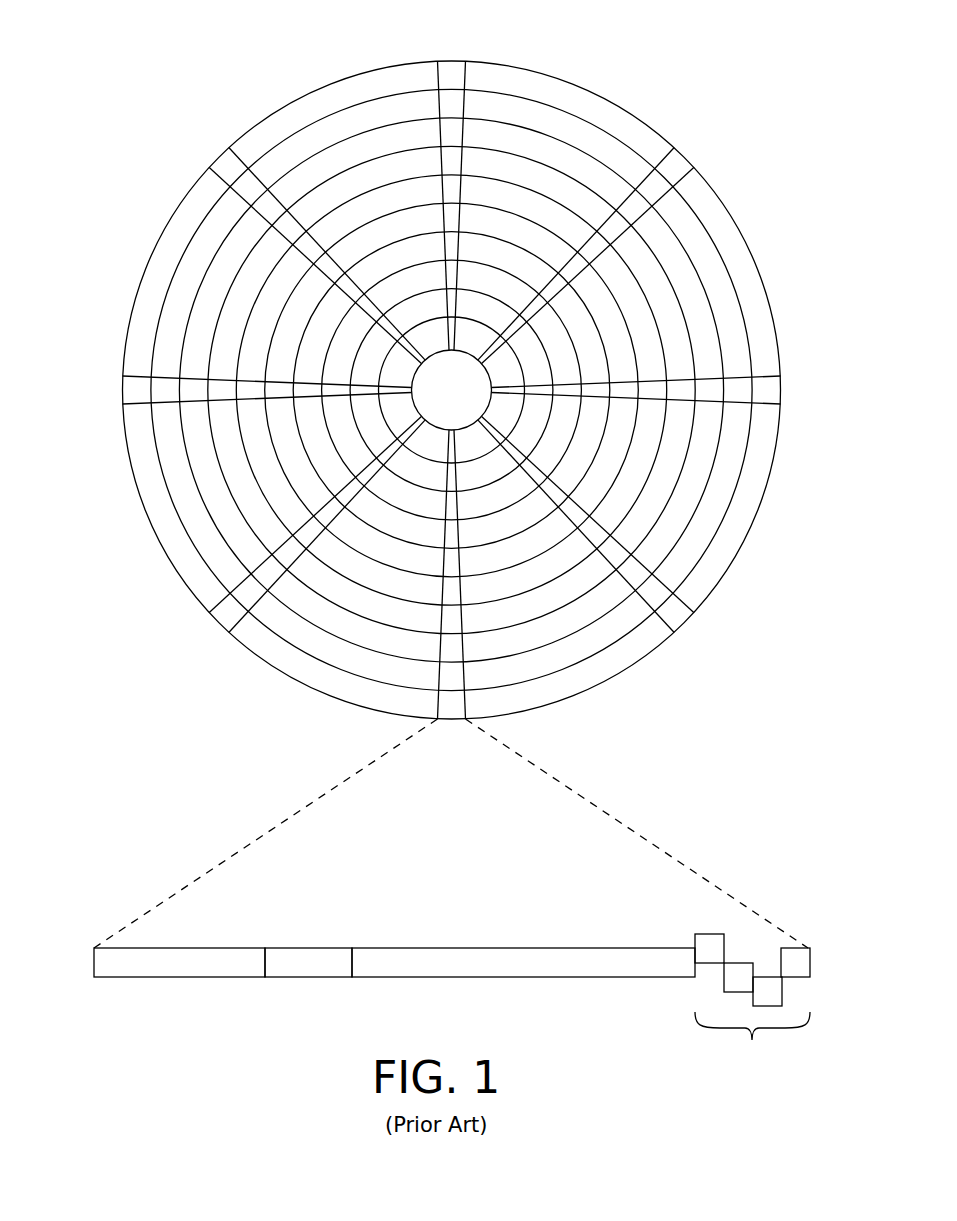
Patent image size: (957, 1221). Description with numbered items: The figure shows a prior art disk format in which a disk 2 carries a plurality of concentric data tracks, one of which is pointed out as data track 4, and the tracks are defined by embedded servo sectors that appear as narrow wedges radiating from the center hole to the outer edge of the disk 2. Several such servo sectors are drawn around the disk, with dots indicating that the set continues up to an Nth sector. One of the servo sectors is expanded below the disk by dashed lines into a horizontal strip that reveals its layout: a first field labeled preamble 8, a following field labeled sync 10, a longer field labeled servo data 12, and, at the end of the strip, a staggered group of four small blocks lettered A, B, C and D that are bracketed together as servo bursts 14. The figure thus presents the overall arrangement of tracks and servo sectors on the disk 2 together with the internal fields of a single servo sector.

The disk 2 is at (208, 66).
The data track 4 is at (563, 130).
The preamble 8 is at (160, 977).
The sync mark 10 is at (305, 977).
The servo data 12 is at (510, 977).
The servo bursts 14 is at (682, 915).